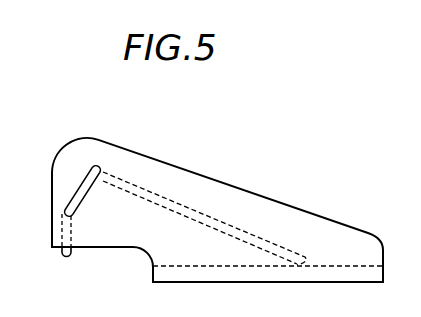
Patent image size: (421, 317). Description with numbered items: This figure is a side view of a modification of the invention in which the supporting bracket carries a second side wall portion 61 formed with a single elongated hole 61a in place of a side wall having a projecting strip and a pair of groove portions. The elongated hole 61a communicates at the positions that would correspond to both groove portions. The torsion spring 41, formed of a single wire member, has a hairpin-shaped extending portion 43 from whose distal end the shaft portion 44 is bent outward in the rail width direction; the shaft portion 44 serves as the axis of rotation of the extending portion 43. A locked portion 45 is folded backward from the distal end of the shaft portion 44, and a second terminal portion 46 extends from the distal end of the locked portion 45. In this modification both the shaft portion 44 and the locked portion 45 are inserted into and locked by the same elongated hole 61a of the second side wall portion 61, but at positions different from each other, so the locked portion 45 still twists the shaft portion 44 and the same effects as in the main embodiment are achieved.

The second side wall portion 61 is at (295, 214).
The elongated hole 61a is at (83, 181).
The shaft portion 44 is at (97, 165).
The second terminal portion 46 is at (64, 257).
The extending portion 43 is at (161, 194).
The torsion spring 41 is at (215, 218).
The locked portion 45 is at (86, 193).